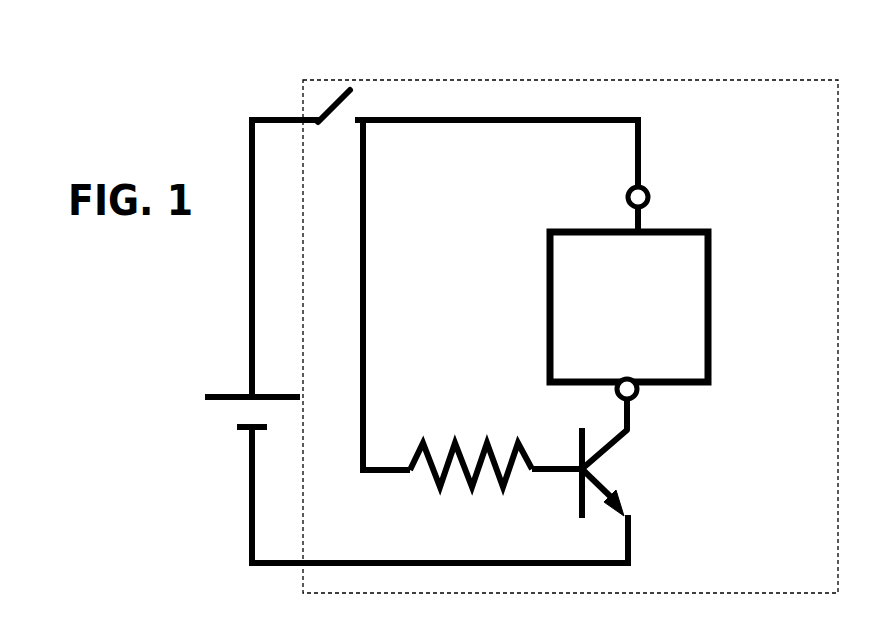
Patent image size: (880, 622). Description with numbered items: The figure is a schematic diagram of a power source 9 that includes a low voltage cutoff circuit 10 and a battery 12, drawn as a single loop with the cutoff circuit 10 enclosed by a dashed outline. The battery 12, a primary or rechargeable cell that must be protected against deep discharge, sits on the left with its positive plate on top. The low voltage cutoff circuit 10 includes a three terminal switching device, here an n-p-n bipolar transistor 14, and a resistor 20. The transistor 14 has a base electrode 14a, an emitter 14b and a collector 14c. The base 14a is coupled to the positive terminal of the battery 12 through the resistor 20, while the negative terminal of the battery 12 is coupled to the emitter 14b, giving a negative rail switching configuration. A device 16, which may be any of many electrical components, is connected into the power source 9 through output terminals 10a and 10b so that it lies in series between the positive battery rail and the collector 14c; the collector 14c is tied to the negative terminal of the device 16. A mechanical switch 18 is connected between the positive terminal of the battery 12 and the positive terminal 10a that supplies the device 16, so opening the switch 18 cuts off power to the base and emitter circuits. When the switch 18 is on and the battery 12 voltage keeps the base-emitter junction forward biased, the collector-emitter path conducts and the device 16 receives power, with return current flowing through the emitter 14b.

The power source 9 is at (177, 112).
The low voltage cutoff circuit 10 is at (312, 94).
The output terminal 10a is at (636, 186).
The output terminal 10b is at (618, 398).
The battery 12 is at (243, 428).
The transistor 14 is at (677, 451).
The base electrode 14a is at (558, 476).
The emitter 14b is at (612, 494).
The collector 14c is at (612, 453).
The device 16 is at (712, 345).
The mechanical switch 18 is at (358, 98).
The resistor 20 is at (422, 485).